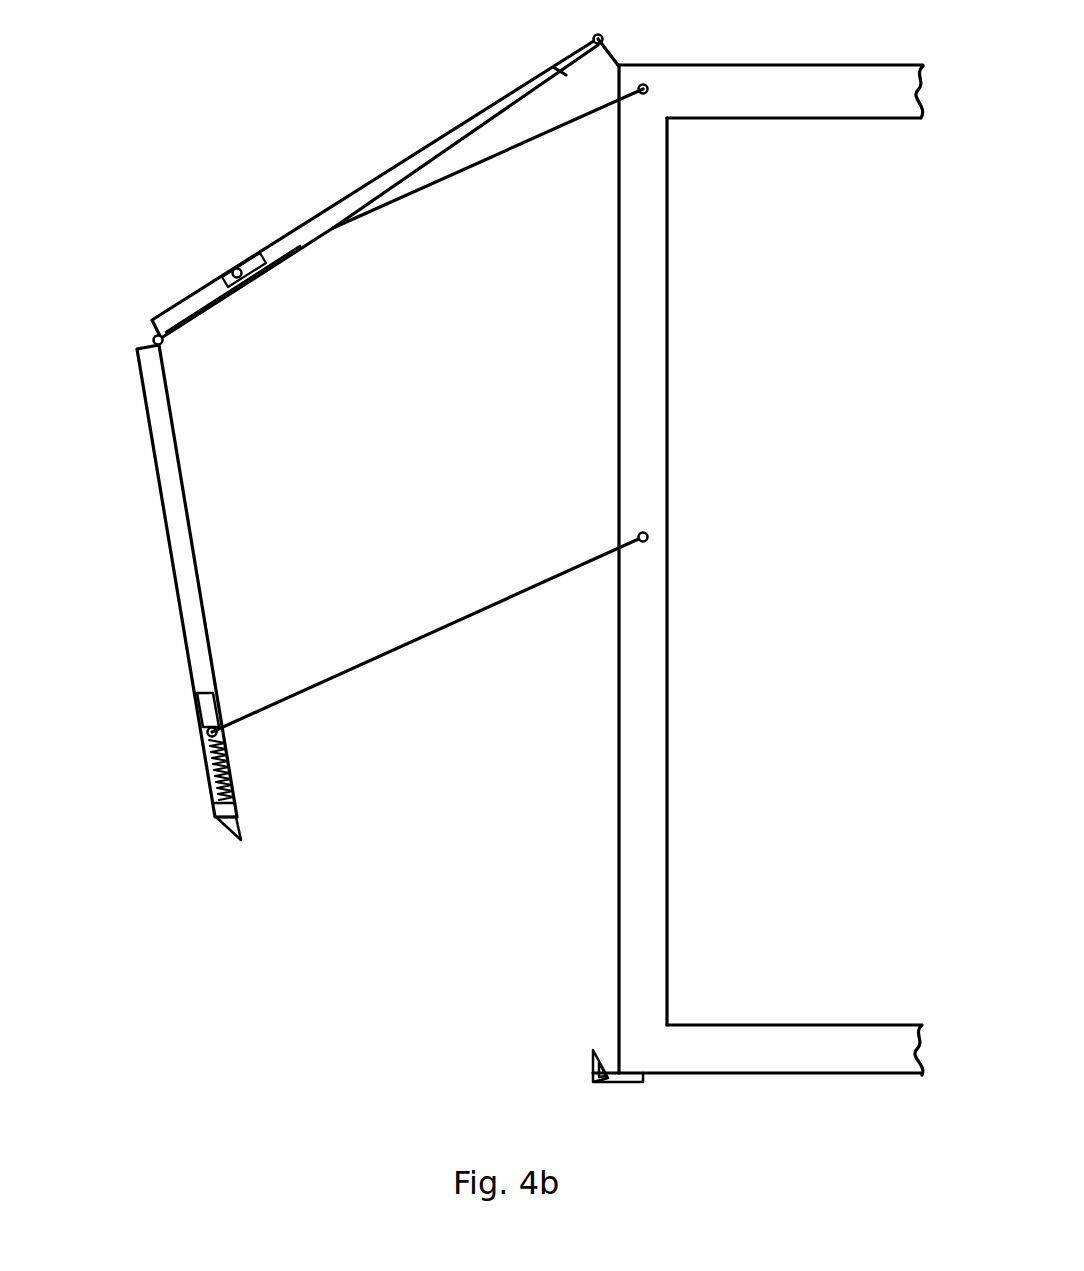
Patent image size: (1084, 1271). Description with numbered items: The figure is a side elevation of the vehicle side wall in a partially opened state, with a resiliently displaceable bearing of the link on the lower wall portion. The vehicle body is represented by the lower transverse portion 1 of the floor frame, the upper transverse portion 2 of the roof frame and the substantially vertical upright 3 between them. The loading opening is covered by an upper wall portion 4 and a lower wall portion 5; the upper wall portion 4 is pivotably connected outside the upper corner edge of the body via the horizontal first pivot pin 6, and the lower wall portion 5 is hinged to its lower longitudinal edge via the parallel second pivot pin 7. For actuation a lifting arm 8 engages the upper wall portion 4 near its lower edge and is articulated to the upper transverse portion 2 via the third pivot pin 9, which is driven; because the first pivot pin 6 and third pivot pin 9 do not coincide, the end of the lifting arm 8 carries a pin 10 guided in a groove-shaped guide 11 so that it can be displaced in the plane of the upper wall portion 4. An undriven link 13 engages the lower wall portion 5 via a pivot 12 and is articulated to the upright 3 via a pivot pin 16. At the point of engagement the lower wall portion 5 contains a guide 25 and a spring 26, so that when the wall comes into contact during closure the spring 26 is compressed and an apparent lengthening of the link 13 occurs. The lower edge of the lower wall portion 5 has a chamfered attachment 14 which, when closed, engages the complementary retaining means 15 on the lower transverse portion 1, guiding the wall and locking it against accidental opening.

The lower transverse portion 1 is at (787, 1043).
The upper transverse portion 2 is at (789, 87).
The upright 3 is at (652, 745).
The upper wall portion 4 is at (430, 147).
The lower wall portion 5 is at (195, 652).
The first pivot pin 6 is at (593, 39).
The second pivot pin 7 is at (152, 339).
The lifting arm 8 is at (568, 125).
The third pivot pin 9 is at (645, 84).
The pin 10 is at (236, 268).
The guide 11 is at (178, 325).
The pivot 12 is at (210, 733).
The link 13 is at (385, 660).
The attachment 14 is at (236, 812).
The retaining means 15 is at (593, 1082).
The pivot pin 16 is at (650, 536).
The guide 25 is at (205, 712).
The spring 26 is at (215, 775).